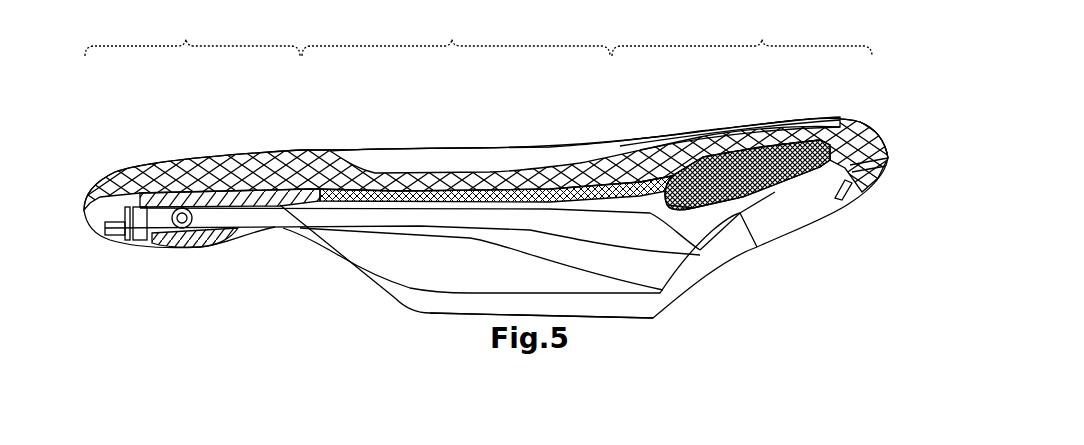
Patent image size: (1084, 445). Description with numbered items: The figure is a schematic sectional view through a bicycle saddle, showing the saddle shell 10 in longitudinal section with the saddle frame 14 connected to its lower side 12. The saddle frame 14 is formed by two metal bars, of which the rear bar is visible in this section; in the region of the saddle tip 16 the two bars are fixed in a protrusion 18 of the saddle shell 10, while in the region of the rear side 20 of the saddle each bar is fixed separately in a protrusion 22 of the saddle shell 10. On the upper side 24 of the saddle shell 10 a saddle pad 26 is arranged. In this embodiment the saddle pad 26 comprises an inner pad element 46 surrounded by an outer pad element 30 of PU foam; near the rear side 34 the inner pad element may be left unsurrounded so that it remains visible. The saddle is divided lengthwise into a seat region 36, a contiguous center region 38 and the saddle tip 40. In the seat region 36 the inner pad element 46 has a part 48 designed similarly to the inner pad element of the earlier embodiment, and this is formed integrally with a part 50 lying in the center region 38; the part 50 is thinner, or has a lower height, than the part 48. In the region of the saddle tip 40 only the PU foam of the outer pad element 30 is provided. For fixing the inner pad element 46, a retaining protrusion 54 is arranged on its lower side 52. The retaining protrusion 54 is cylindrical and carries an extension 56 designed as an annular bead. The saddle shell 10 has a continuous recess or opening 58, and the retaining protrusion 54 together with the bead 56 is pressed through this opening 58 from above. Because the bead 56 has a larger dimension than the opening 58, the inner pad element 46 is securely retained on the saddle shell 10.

The saddle shell 10 is at (303, 208).
The lower side 12 is at (353, 205).
The saddle frame 14 is at (410, 299).
The saddle tip 16 is at (134, 248).
The protrusion 18 is at (163, 240).
The rear side 20 is at (836, 230).
The protrusion 22 is at (790, 213).
The upper side 24 is at (485, 190).
The saddle pad 26 is at (552, 127).
The outer pad element 30 is at (432, 173).
The rear side 34 is at (869, 111).
The seat region 36 is at (742, 31).
The center region 38 is at (456, 31).
The saddle tip 40 is at (192, 31).
The inner pad element 46 is at (692, 125).
The part 48 is at (717, 138).
The part 50 is at (604, 165).
The lower side 52 is at (713, 207).
The retaining protrusion 54 is at (666, 130).
The extension 56 is at (700, 216).
The opening 58 is at (768, 126).